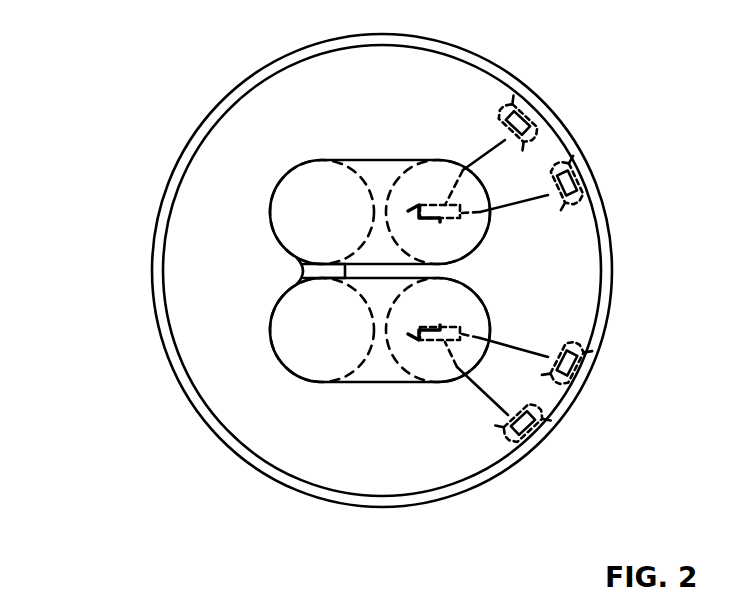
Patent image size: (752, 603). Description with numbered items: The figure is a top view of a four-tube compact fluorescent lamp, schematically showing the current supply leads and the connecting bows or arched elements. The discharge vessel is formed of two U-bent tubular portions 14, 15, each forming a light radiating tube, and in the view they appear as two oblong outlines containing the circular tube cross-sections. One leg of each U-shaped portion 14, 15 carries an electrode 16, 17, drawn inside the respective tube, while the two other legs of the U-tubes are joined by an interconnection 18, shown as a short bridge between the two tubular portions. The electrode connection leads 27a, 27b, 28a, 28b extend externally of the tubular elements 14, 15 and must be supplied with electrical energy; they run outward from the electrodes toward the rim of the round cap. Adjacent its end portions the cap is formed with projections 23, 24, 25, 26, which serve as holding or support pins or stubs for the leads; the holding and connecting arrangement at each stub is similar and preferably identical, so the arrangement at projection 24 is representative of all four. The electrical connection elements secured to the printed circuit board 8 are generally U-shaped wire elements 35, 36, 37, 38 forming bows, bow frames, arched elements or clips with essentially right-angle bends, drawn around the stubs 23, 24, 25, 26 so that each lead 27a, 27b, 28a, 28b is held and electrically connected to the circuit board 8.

The printed circuit board 8 is at (228, 368).
The U-bent tubular portion 14 is at (375, 372).
The U-bent tubular portion 15 is at (345, 161).
The electrode 16 is at (440, 325).
The electrode 17 is at (440, 221).
The interconnection 18 is at (296, 268).
The projection 23 is at (545, 427).
The projection 24 is at (578, 367).
The projection 25 is at (590, 186).
The projection 26 is at (543, 127).
The electrode connection lead 27a is at (485, 397).
The electrode connection lead 27b is at (503, 342).
The electrode connection lead 28a is at (520, 200).
The electrode connection lead 28b is at (505, 140).
The U-shaped wire element 35 is at (537, 448).
The U-shaped wire element 36 is at (573, 353).
The U-shaped wire element 37 is at (583, 197).
The U-shaped wire element 38 is at (532, 122).